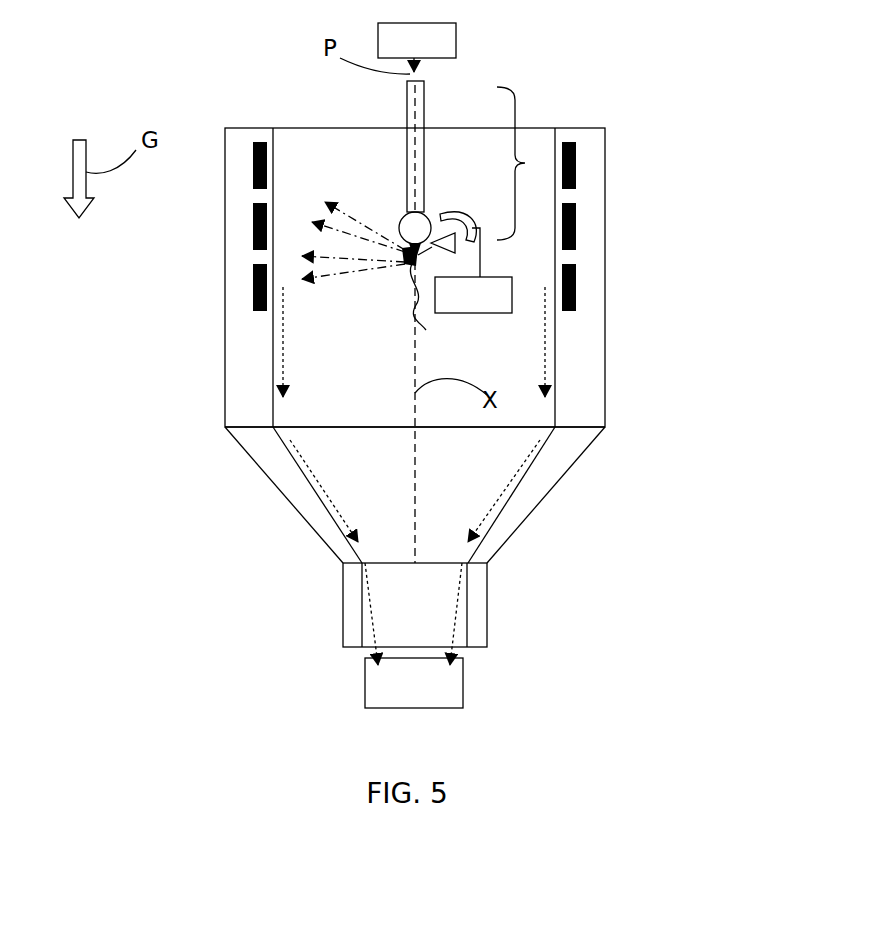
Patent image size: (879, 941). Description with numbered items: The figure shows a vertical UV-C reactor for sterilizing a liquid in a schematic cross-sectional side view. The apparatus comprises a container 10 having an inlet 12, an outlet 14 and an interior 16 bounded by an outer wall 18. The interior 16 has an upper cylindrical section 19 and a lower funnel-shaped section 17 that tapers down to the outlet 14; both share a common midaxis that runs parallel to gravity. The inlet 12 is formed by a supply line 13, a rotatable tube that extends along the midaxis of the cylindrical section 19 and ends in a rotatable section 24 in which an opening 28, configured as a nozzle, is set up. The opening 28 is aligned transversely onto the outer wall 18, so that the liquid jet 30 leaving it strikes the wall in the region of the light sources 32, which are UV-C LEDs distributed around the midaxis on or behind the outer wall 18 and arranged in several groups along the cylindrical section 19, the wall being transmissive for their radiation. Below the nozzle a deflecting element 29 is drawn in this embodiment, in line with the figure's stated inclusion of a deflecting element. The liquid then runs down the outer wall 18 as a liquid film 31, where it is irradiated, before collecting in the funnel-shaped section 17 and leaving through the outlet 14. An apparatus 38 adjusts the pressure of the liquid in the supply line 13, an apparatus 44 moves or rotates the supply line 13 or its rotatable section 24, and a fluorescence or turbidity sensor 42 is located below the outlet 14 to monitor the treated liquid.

The container 10 is at (605, 175).
The inlet 12 is at (515, 115).
The supply line 13 is at (407, 104).
The outlet 14 is at (432, 613).
The interior 16 is at (347, 358).
The funnel-shaped section of the interior 17 is at (458, 493).
The outer wall of the interior 18 is at (605, 360).
The cylindrical section of the interior 19 is at (315, 415).
The rotatable section of the supply line 24 is at (420, 226).
The opening, nozzle 28 is at (412, 256).
The molten stream 29 is at (428, 300).
The liquid jet 30 is at (318, 192).
The liquid film flowing down 31 is at (275, 345).
The light sources, UV-C LEDs 32 is at (573, 263).
The apparatus for adjusting the pressure of the liquid in the supply line 38 is at (456, 45).
The fluorescence or turbidity sensor 42 is at (363, 687).
The apparatus for moving the supply line or the rotatable section thereof 44 is at (475, 313).